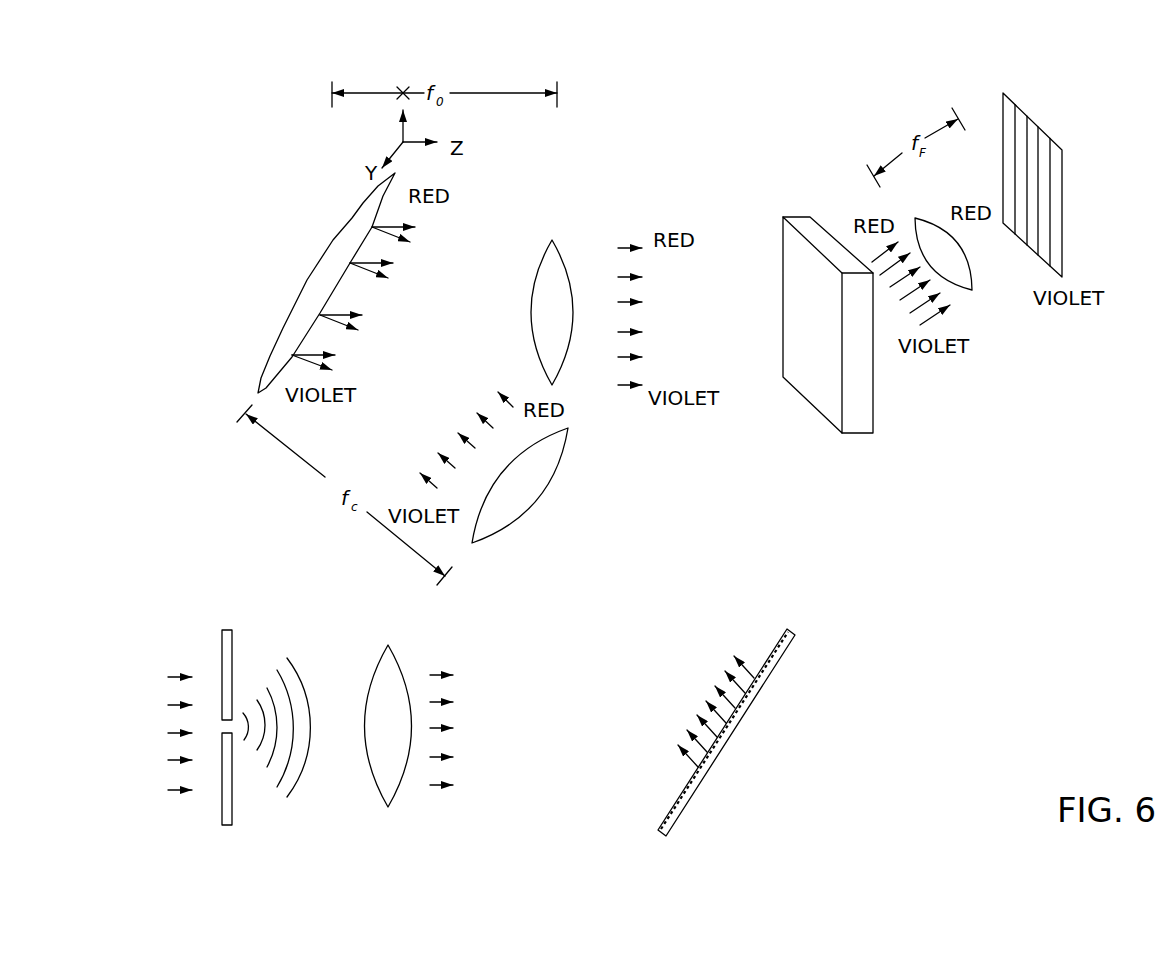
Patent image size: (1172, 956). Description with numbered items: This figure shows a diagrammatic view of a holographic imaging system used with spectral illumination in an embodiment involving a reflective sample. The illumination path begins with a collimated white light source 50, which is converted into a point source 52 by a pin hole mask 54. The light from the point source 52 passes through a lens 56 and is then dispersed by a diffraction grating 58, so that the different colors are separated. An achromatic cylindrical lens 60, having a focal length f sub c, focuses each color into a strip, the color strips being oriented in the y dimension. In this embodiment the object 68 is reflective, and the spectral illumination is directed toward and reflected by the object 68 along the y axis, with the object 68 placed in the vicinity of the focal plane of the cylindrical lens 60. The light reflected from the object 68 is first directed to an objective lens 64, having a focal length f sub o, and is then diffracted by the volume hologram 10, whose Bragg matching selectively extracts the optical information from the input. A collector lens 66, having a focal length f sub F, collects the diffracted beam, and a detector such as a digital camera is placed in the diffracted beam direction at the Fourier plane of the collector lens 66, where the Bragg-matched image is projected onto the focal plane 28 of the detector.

The volume hologram 10 is at (873, 405).
The focal plane of a detector 28 is at (1062, 202).
The collimated white light source 50 is at (177, 662).
The point source 52 is at (292, 678).
The pin hole mask 54 is at (225, 628).
The lens 56 is at (392, 648).
The diffraction grating 58 is at (785, 651).
The achromatic cylindrical lens 60 is at (568, 430).
The objective lens 64 is at (554, 240).
The collector lens 66 is at (972, 290).
The object 68 is at (350, 218).